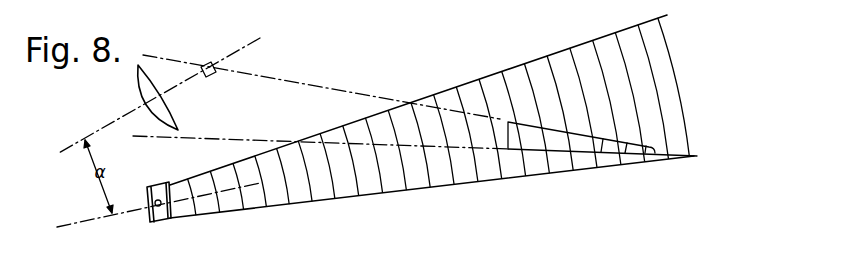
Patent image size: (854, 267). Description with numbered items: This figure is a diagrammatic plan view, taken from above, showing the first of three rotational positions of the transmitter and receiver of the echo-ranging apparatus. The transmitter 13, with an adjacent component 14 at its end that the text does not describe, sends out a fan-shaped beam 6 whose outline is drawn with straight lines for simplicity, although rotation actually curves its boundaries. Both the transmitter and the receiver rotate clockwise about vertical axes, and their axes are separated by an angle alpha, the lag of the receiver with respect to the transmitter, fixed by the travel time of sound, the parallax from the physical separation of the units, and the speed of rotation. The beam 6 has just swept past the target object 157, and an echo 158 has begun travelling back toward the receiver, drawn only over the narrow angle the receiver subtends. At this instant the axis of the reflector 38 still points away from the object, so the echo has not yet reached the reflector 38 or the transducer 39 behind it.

The beam 6 is at (483, 181).
The transmitter 13 is at (167, 208).
The end cap with aperture 14 is at (150, 220).
The reflector 38 is at (146, 92).
The transducer 39 is at (212, 63).
The inner wedge horn 157 is at (654, 155).
The inner wedge ribs 158 is at (575, 152).